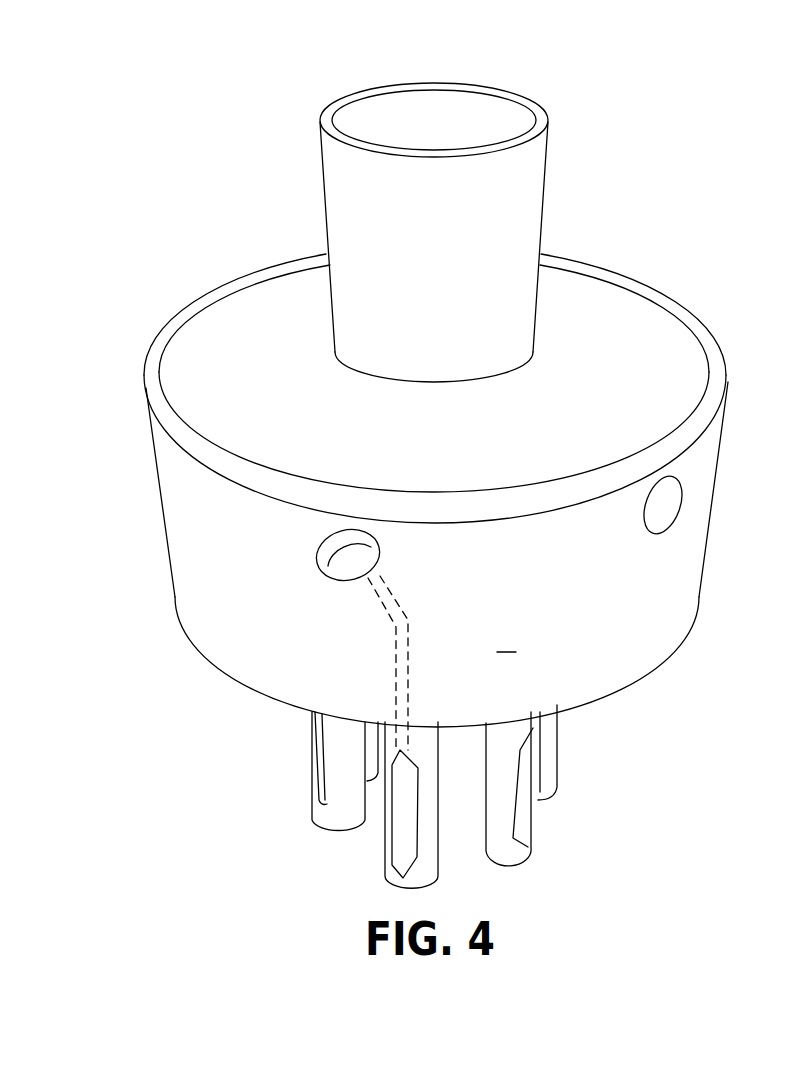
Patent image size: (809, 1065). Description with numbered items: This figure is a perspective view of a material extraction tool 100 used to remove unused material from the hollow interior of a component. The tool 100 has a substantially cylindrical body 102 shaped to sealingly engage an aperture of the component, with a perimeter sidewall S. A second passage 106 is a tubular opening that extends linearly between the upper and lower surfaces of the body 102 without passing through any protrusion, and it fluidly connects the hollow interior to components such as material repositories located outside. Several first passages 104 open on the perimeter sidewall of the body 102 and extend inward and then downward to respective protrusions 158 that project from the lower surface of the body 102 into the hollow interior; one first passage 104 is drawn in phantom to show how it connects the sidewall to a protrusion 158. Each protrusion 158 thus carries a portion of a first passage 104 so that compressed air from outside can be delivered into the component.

The material extraction tool 100 is at (175, 247).
The body 102 is at (183, 480).
The first passages 104 is at (360, 566).
The second passage 106 is at (421, 122).
The protrusions 158 is at (333, 755).